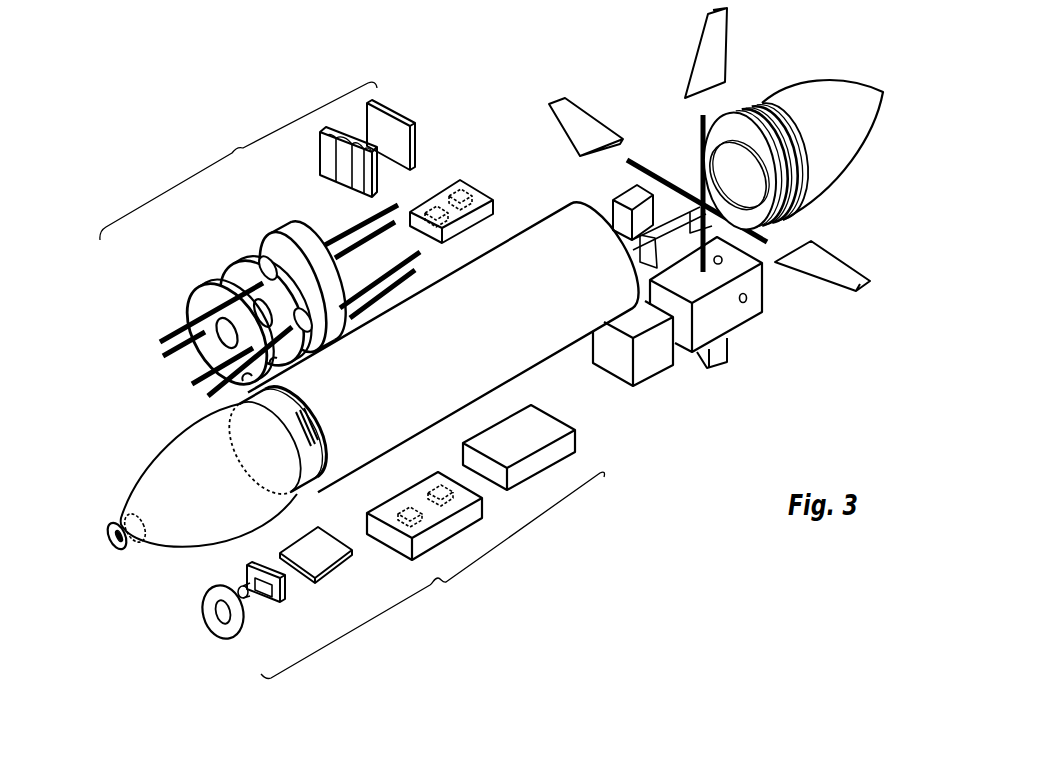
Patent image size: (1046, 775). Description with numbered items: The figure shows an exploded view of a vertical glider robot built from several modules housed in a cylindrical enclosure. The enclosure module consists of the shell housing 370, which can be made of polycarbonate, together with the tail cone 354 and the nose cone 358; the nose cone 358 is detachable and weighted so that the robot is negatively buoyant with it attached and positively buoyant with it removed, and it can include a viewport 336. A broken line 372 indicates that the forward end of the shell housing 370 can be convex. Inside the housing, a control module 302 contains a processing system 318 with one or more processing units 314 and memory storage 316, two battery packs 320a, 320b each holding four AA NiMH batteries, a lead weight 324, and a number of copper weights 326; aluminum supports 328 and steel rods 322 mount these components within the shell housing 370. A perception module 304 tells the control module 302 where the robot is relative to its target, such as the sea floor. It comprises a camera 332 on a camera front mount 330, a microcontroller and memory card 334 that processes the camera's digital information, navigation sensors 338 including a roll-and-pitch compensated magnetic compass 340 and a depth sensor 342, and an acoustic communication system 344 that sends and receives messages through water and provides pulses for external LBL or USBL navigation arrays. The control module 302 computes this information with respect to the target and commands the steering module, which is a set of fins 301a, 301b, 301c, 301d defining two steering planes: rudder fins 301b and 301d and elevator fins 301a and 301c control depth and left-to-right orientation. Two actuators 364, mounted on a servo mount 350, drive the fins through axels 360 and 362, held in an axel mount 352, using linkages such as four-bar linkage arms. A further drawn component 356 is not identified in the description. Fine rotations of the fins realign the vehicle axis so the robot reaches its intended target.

The control module 302 is at (238, 161).
The perception module 304 is at (433, 575).
The processing units 314 is at (428, 232).
The memory storage 316 is at (462, 192).
The processing system 318 is at (450, 193).
The battery pack 320a is at (340, 195).
The battery pack 320b is at (398, 108).
The steel rods 322 is at (208, 397).
The lead weight 324 is at (277, 252).
The copper weights 326 is at (270, 262).
The aluminum supports 328 is at (205, 300).
The camera front mount 330 is at (211, 623).
The camera 332 is at (284, 588).
The microcontroller and memory card 334 is at (350, 566).
The viewport 336 is at (110, 538).
The navigation sensors 338 is at (447, 523).
The roll-and-pitch compensated magnetic compass 340 is at (407, 511).
The depth sensor 342 is at (438, 490).
The communication system 344 is at (543, 462).
The servo mount 350 is at (645, 378).
The axel mount 352 is at (767, 292).
The tail cone 354 is at (803, 203).
The nose cone 356 is at (863, 146).
The nose cone 358 is at (148, 488).
The axel 360 is at (700, 117).
The axel 362 is at (623, 160).
The actuators 364 is at (608, 218).
The shell housing 370 is at (544, 362).
The broken line 372 is at (227, 438).
The elevator fin 301a is at (562, 138).
The rudder fin 301b is at (688, 62).
The elevator fin 301c is at (845, 258).
The rudder fin 301d is at (730, 345).